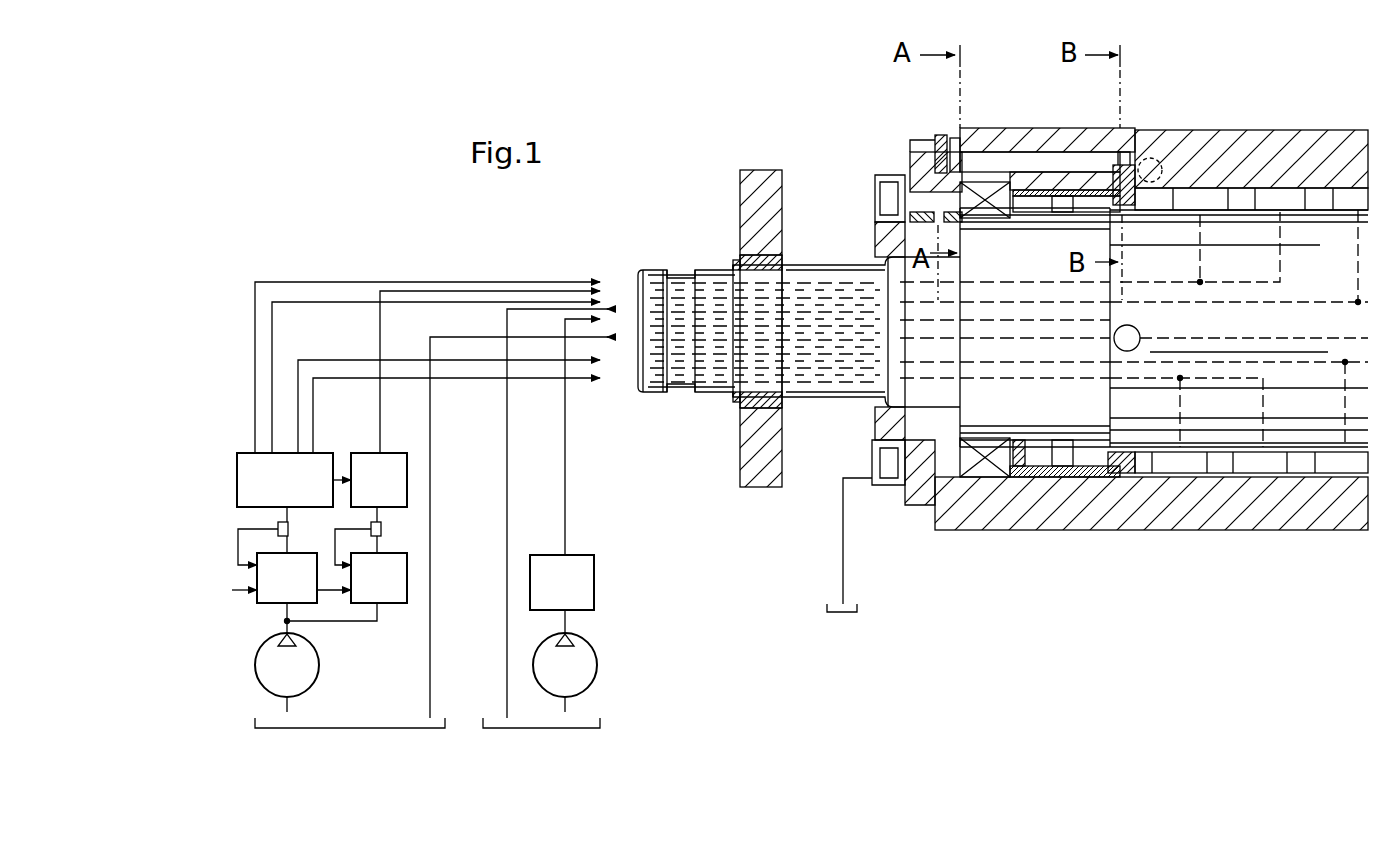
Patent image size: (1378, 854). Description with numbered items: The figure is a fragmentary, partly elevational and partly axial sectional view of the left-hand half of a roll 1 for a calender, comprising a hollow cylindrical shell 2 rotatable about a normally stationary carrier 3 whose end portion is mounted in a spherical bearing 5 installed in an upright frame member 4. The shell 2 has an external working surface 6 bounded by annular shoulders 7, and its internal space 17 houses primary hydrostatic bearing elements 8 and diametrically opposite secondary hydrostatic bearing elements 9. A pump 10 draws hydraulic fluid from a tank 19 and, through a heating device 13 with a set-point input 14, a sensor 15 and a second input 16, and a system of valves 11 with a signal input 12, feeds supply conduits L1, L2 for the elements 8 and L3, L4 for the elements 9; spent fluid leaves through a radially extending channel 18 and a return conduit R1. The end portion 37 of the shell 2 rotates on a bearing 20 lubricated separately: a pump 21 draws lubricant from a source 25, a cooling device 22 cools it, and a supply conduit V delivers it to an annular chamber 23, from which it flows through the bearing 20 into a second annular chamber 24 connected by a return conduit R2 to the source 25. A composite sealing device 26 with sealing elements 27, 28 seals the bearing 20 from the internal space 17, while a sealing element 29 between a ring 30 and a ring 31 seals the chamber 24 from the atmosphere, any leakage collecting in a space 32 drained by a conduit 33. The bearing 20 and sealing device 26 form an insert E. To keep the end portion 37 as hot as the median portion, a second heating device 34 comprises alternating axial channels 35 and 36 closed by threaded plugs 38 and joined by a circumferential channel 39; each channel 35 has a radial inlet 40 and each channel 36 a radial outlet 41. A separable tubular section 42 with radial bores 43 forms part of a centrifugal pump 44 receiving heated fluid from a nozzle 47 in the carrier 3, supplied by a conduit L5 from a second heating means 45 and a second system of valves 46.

The roll 1 is at (1232, 130).
The shell 2 is at (1326, 132).
The carrier 3 is at (1318, 330).
The upright frame member 4 is at (761, 178).
The spherical bearing 5 is at (740, 245).
The external working surface 6 is at (1083, 136).
The annular shoulder 7 is at (940, 140).
The primary hydrostatic bearing element 8 is at (1276, 196).
The secondary hydrostatic bearing element 9 is at (1263, 466).
The pump 10 is at (318, 676).
The system of valves 11 is at (285, 480).
The input 12 is at (237, 480).
The heating device 13 is at (287, 578).
The input 14 is at (241, 592).
The sensor 15 is at (288, 530).
The second input 16 is at (247, 566).
The internal space 17 is at (1148, 470).
The radially extending channel 18 is at (1138, 331).
The tank 19 is at (352, 735).
The bearing 20 is at (984, 460).
The pump 21 is at (598, 668).
The cooling device 22 is at (562, 582).
The annular chamber 23 is at (1016, 206).
The second annular chamber 24 is at (945, 210).
The source 25 is at (537, 735).
The composite sealing device 26 is at (1036, 480).
The sealing element 27 is at (1030, 205).
The sealing element 28 is at (1123, 218).
The sealing element 29 is at (895, 458).
The ring 30 is at (895, 212).
The ring 31 is at (920, 490).
The seal fluid collecting space 32 is at (883, 483).
The conduit 33 is at (843, 520).
The second heating device 34 is at (971, 150).
The channel 35 is at (1053, 160).
The channel 36 is at (1160, 160).
The end portion 37 is at (1073, 474).
The threaded plug 38 is at (930, 208).
The circumferentially extending channel 39 is at (951, 148).
The inlet 40 is at (1122, 168).
The outlet 41 is at (1160, 180).
The tubular section 42 is at (1120, 470).
The radially extending bore 43 is at (1130, 190).
The centrifugal pump 44 is at (1133, 190).
The second heating means 45 is at (379, 578).
The second system of valves 46 is at (379, 480).
The nozzle 47 is at (1125, 282).
The supply conduit L1 is at (292, 278).
The supply conduit L2 is at (328, 300).
The supply conduit L3 is at (304, 358).
The supply conduit L4 is at (333, 376).
The supply conduit L5 is at (528, 289).
The return conduit R1 is at (432, 440).
The return conduit R2 is at (509, 440).
The supply conduit V is at (567, 455).
The insert E is at (1010, 492).